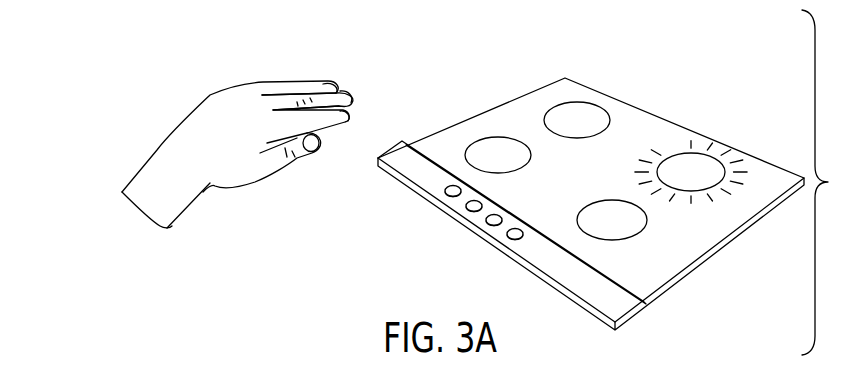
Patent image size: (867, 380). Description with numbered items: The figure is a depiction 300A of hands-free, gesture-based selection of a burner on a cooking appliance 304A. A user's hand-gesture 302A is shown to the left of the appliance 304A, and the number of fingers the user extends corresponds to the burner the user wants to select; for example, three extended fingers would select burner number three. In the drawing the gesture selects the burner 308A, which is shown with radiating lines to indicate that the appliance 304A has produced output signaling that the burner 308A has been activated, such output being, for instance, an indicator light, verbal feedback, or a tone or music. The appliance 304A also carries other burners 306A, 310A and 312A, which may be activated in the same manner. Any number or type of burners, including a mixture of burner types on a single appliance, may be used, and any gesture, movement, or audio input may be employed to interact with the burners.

The depiction 300A is at (103, 90).
The hand-gesture 302A is at (215, 93).
The appliance 304A is at (442, 130).
The burner 306A is at (563, 101).
The burner 308A is at (678, 152).
The burner 310A is at (498, 136).
The burner 312A is at (600, 199).